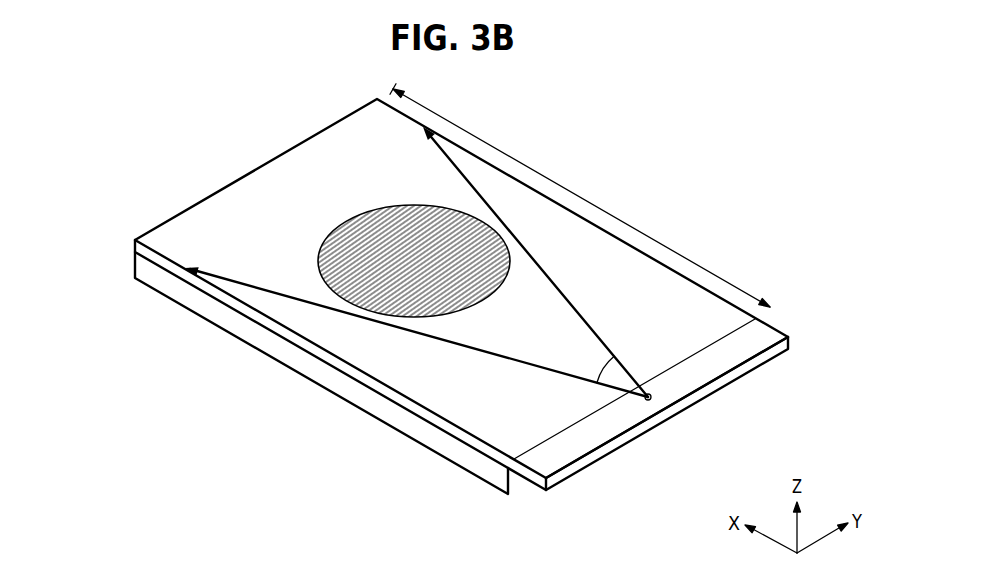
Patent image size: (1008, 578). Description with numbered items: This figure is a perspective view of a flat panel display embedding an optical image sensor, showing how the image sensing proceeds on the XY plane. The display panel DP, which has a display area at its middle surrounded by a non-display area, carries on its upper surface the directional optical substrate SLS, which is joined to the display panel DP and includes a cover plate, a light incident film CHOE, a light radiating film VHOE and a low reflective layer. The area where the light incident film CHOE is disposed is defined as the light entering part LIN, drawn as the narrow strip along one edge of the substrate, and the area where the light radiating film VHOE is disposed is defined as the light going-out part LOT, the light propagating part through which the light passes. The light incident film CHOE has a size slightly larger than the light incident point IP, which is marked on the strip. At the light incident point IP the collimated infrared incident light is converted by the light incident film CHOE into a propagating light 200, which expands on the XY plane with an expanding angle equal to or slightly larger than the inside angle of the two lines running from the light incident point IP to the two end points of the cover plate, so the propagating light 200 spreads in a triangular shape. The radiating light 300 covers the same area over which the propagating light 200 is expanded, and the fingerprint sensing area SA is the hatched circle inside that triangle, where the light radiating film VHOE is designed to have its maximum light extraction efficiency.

The sensing area SA is at (357, 220).
The light going-out part LOT is at (580, 195).
The light entering part LIN is at (800, 332).
The display panel DP is at (232, 323).
The directional optical substrate SLS is at (300, 340).
The light radiating film VHOE is at (380, 363).
The light incident film CHOE is at (567, 448).
The light incident point IP is at (652, 401).
The propagating light 200 is at (578, 313).
The radiating light 300 is at (416, 276).